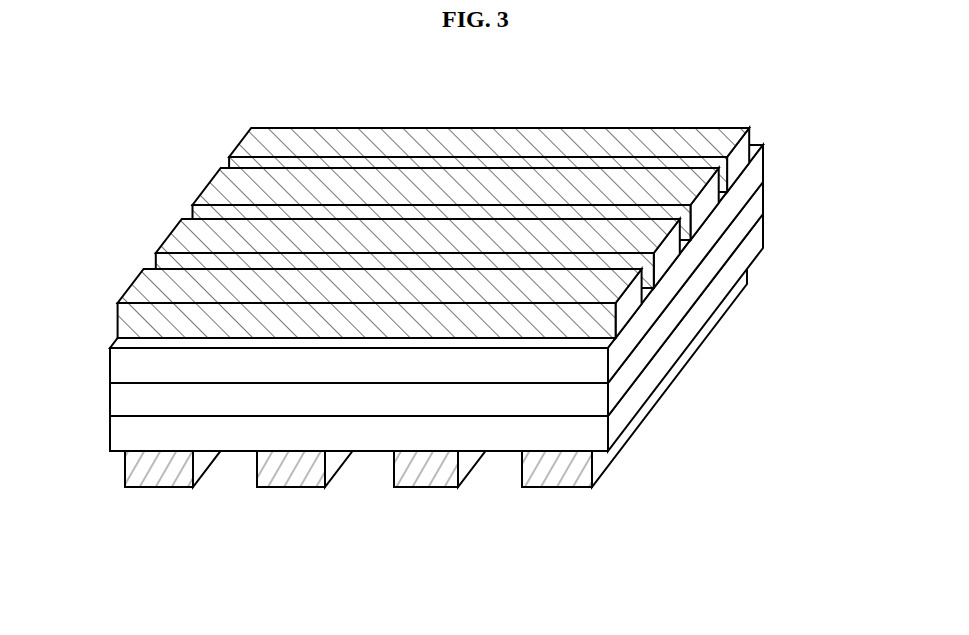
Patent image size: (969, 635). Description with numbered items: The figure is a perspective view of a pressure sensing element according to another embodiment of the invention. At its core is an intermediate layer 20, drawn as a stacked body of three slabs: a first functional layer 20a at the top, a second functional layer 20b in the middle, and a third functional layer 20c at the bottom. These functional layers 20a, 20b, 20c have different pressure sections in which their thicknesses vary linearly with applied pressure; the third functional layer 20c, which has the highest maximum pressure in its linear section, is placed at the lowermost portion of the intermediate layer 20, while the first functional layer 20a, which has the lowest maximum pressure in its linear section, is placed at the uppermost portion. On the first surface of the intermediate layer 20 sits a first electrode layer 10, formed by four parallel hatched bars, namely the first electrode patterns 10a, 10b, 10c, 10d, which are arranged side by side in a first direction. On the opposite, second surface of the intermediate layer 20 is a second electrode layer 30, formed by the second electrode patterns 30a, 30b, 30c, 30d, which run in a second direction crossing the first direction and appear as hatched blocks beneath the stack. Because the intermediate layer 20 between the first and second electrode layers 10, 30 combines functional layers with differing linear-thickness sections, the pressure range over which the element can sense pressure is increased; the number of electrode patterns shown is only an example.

The first electrode layer 10 is at (407, 199).
The first electrode pattern 10a is at (363, 278).
The first electrode pattern 10b is at (187, 242).
The first electrode pattern 10c is at (223, 193).
The first electrode pattern 10d is at (255, 152).
The intermediate layer 20 is at (495, 298).
The first functional layer 20a is at (756, 170).
The second functional layer 20b is at (756, 202).
The third functional layer 20c is at (756, 236).
The second electrode layer 30 is at (412, 418).
The second electrode pattern 30a is at (158, 470).
The second electrode pattern 30b is at (292, 470).
The second electrode pattern 30c is at (428, 470).
The second electrode pattern 30d is at (616, 393).